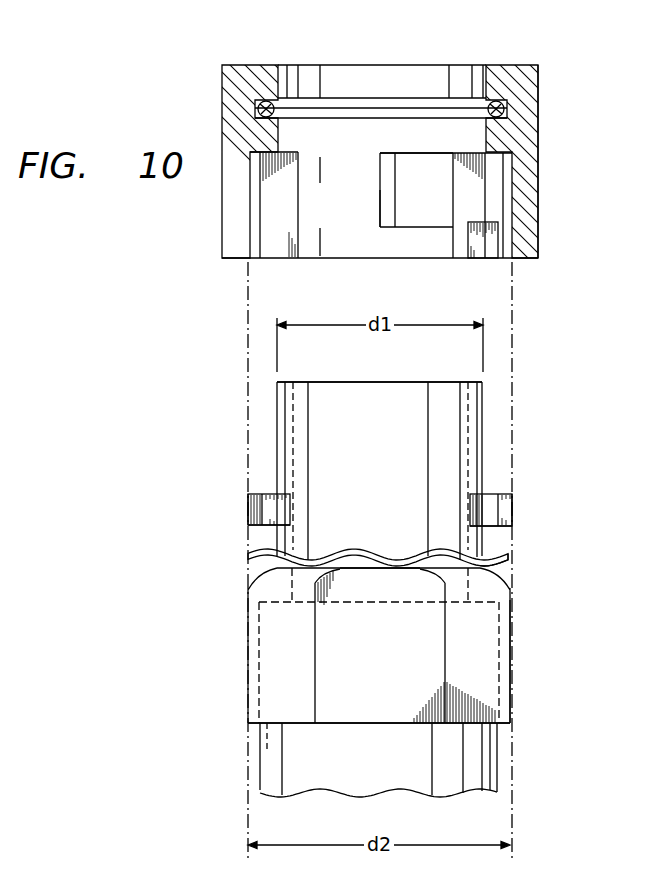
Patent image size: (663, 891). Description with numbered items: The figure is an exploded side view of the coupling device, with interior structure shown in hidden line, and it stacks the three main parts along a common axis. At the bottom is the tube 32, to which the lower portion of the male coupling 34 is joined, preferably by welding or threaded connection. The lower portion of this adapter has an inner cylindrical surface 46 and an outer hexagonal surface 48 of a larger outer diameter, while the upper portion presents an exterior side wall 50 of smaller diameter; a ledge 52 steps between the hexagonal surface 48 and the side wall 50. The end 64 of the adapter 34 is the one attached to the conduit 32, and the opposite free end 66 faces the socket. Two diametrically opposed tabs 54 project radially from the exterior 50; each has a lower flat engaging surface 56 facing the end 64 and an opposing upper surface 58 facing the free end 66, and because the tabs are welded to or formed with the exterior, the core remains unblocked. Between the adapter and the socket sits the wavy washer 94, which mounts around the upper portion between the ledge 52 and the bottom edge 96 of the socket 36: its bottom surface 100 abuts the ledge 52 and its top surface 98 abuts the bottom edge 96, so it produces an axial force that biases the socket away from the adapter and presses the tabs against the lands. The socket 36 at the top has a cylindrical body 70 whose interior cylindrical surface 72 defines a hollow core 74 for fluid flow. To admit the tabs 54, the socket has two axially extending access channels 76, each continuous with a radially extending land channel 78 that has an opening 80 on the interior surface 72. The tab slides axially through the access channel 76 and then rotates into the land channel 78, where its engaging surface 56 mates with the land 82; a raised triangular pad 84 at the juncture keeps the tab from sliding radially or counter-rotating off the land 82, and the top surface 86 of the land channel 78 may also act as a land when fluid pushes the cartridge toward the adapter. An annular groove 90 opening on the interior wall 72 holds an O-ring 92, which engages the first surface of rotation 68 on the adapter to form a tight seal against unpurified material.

The tube 32 is at (312, 788).
The male coupling 34 is at (520, 644).
The socket 36 is at (538, 119).
The inner cylindrical surface 46 is at (270, 672).
The outer hexagonal surface 48 is at (512, 686).
The exterior side wall 50 is at (484, 420).
The ledge 52 is at (440, 562).
The tab 54 is at (240, 506).
The engaging surface 56 is at (263, 526).
The upper surface 58 is at (263, 494).
The end 64 is at (363, 726).
The free end 66 is at (418, 382).
The first surface of rotation 68 is at (277, 422).
The cylindrical body 70 is at (310, 217).
The interior cylindrical surface 72 is at (470, 82).
The hollow core 74 is at (382, 76).
The access channel 76 is at (273, 250).
The land channel 78 is at (408, 186).
The opening 80 is at (383, 207).
The land 82 is at (433, 220).
The raised triangular pad 84 is at (492, 224).
The top surface 86 is at (408, 157).
The annular groove 90 is at (319, 100).
The O-ring 92 is at (280, 108).
The wavy washer 94 is at (508, 562).
The bottom edge 96 is at (517, 265).
The top surface 98 is at (385, 560).
The bottom surface 100 is at (355, 565).